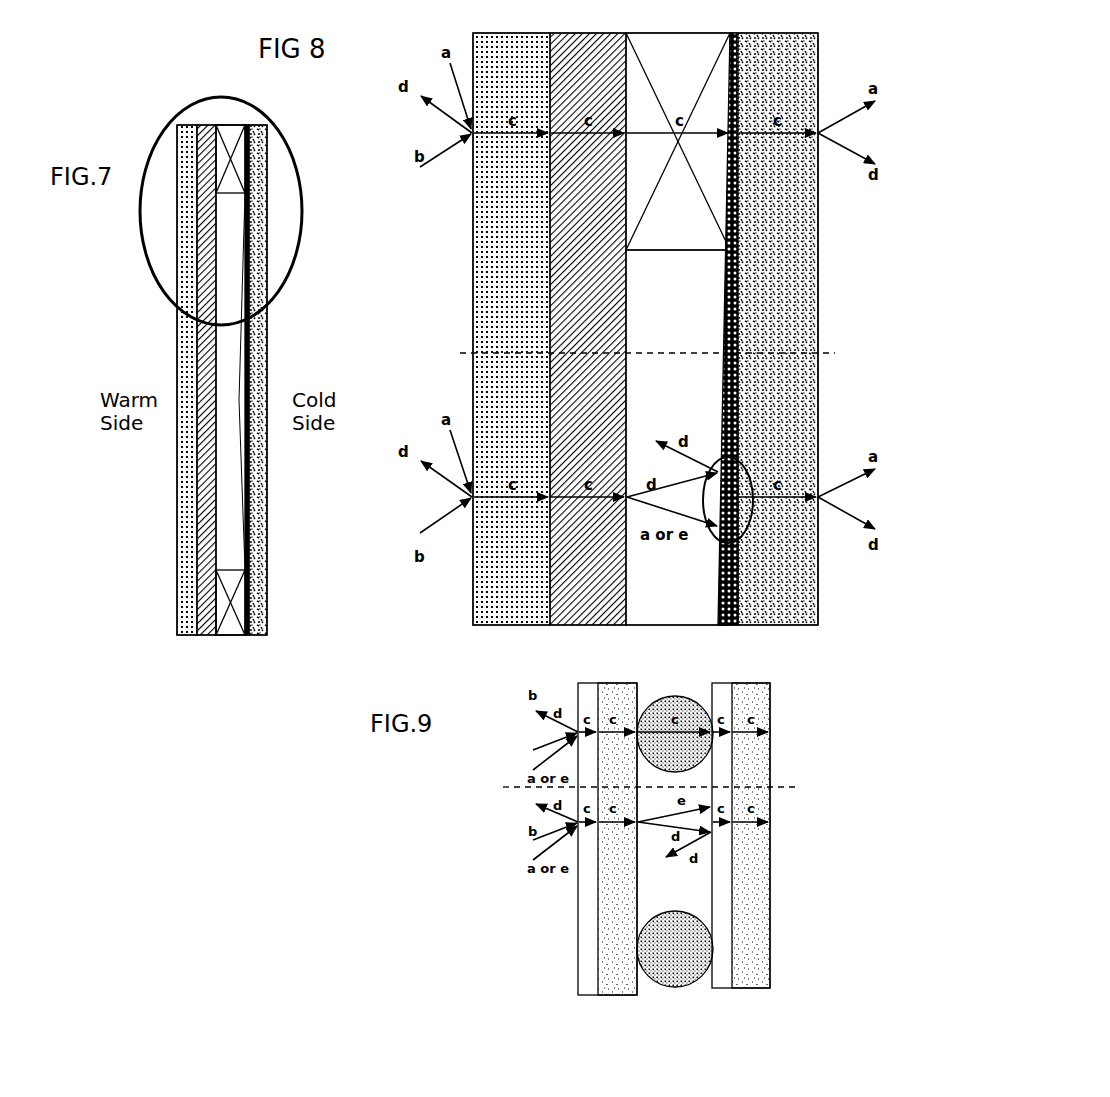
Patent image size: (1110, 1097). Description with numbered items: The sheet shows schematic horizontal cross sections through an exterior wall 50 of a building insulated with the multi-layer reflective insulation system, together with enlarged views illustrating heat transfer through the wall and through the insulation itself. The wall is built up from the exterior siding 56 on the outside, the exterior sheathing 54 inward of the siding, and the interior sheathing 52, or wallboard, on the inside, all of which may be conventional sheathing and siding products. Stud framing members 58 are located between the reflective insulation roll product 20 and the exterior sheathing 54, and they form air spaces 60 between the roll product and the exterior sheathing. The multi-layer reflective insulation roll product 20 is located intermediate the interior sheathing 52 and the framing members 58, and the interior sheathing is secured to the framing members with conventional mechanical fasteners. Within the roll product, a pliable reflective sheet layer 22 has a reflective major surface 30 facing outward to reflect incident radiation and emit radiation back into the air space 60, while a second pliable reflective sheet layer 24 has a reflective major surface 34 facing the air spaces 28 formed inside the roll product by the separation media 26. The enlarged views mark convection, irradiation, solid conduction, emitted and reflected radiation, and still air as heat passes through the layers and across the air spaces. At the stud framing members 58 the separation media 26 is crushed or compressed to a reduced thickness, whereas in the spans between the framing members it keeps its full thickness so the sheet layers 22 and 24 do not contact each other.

In FIG. 7, the multi-layer reflective insulation roll product 20 is at (244, 638).
In FIG. 8, the multi-layer reflective insulation roll product 20 is at (741, 437).
In FIG. 9, the multi-layer reflective insulation roll product 20 is at (484, 936).
In FIG. 9, the pliable reflective sheet layer 22 is at (605, 998).
In FIG. 9, the pliable reflective sheet layer 24 is at (746, 991).
In FIG. 9, the separation media 26 is at (683, 991).
In FIG. 9, the air space 28 is at (667, 888).
In FIG. 9, the reflective major surface 30 is at (578, 975).
In FIG. 9, the reflective major surface 34 is at (712, 882).
In FIG. 7, the exterior wall 50 is at (124, 320).
In FIG. 8, the exterior wall 50 is at (427, 271).
In FIG. 7, the interior sheathing 52 is at (257, 638).
In FIG. 8, the interior sheathing 52 is at (820, 602).
In FIG. 7, the exterior sheathing 54 is at (205, 638).
In FIG. 8, the exterior sheathing 54 is at (630, 598).
In FIG. 7, the exterior siding 56 is at (185, 638).
In FIG. 8, the exterior siding 56 is at (472, 590).
In FIG. 7, the stud framing member 58 is at (229, 638).
In FIG. 8, the stud framing member 58 is at (700, 86).
In FIG. 7, the air space 60 is at (232, 497).
In FIG. 8, the air space 60 is at (695, 326).
In FIG. 9, the air space 60 is at (507, 897).